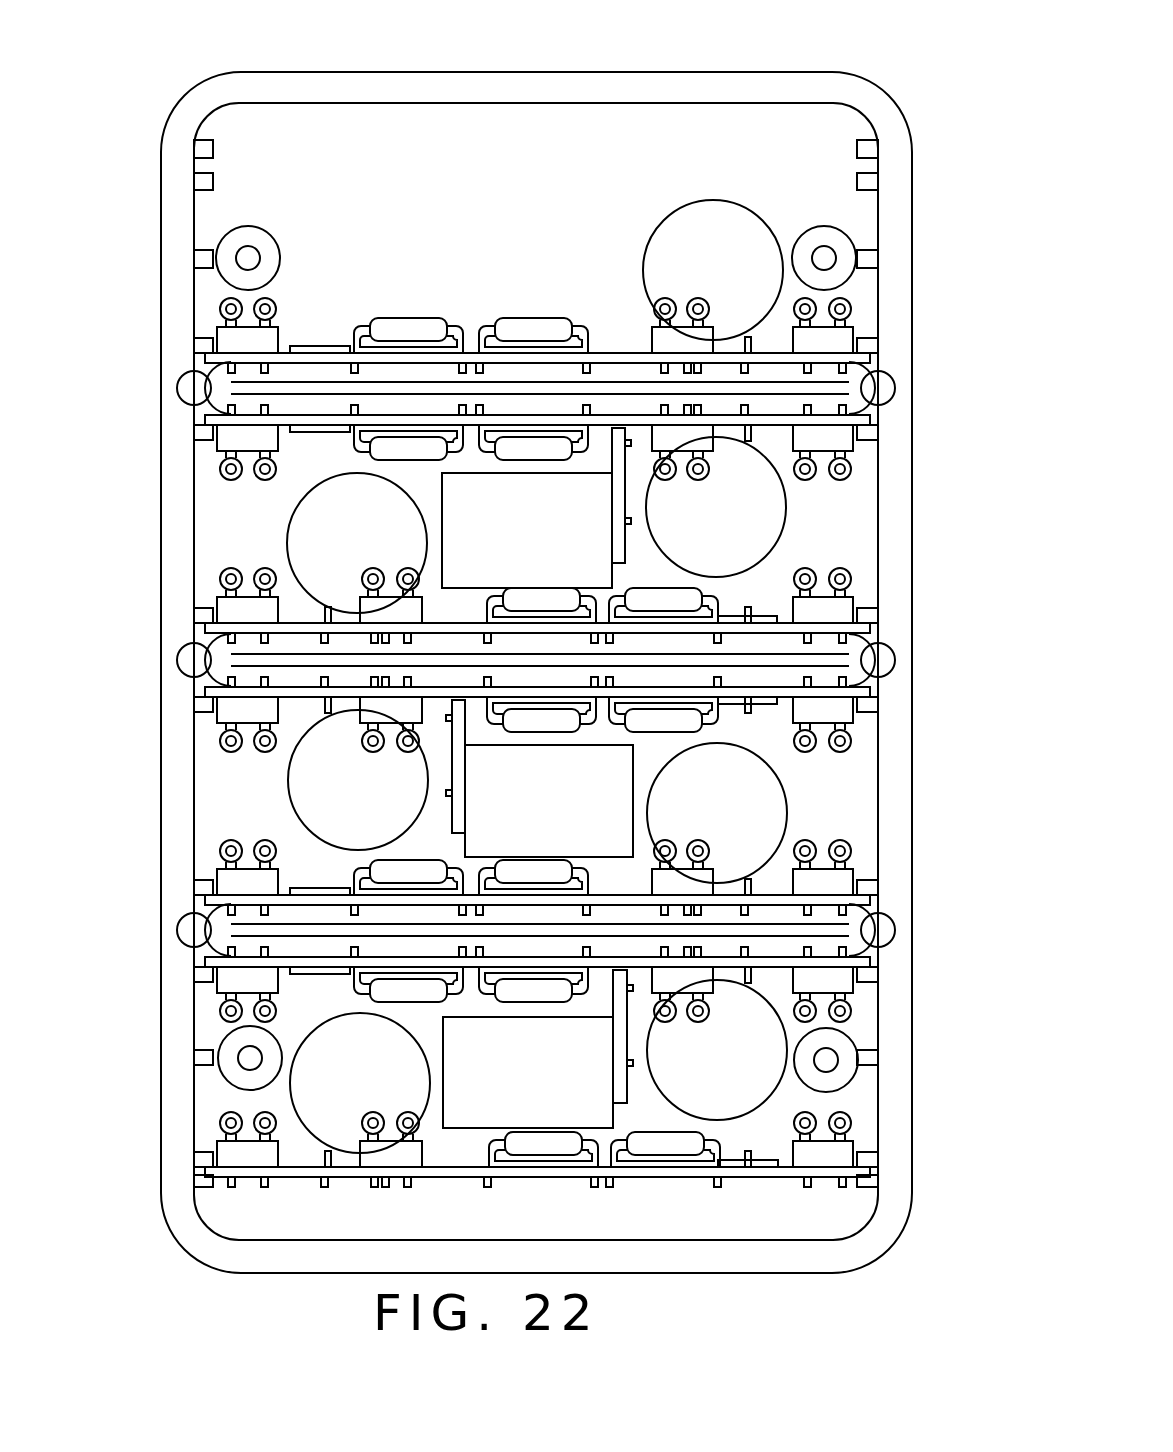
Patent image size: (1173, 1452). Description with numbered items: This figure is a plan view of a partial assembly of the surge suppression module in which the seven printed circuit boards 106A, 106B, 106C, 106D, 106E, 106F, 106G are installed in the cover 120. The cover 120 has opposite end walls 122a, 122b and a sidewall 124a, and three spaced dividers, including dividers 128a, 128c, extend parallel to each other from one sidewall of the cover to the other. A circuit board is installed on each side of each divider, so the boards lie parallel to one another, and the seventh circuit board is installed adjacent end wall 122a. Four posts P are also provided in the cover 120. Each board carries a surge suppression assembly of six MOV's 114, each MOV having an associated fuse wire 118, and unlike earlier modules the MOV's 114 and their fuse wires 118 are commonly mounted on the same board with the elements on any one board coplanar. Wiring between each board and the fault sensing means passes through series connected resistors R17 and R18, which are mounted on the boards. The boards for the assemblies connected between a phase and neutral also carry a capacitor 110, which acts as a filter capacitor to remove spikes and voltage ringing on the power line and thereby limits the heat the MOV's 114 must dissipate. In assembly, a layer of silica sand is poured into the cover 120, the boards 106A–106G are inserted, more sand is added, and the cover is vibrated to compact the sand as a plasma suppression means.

The cover 120 is at (498, 678).
The end wall 122a is at (663, 1273).
The end wall 122b is at (311, 70).
The sidewall 124a is at (160, 826).
The divider 128a is at (160, 958).
The divider 128c is at (250, 390).
The printed circuit board 106A is at (767, 1182).
The printed circuit board 106B is at (771, 973).
The printed circuit board 106C is at (773, 887).
The printed circuit board 106D is at (783, 706).
The printed circuit board 106E is at (786, 618).
The printed circuit board 106F is at (775, 432).
The printed circuit board 106G is at (775, 346).
The capacitor 110 is at (546, 546).
The MOV 114 is at (664, 221).
The fuse wire 118 is at (316, 346).
The resistor R17 is at (403, 318).
The resistor R18 is at (532, 318).
The post P is at (275, 240).